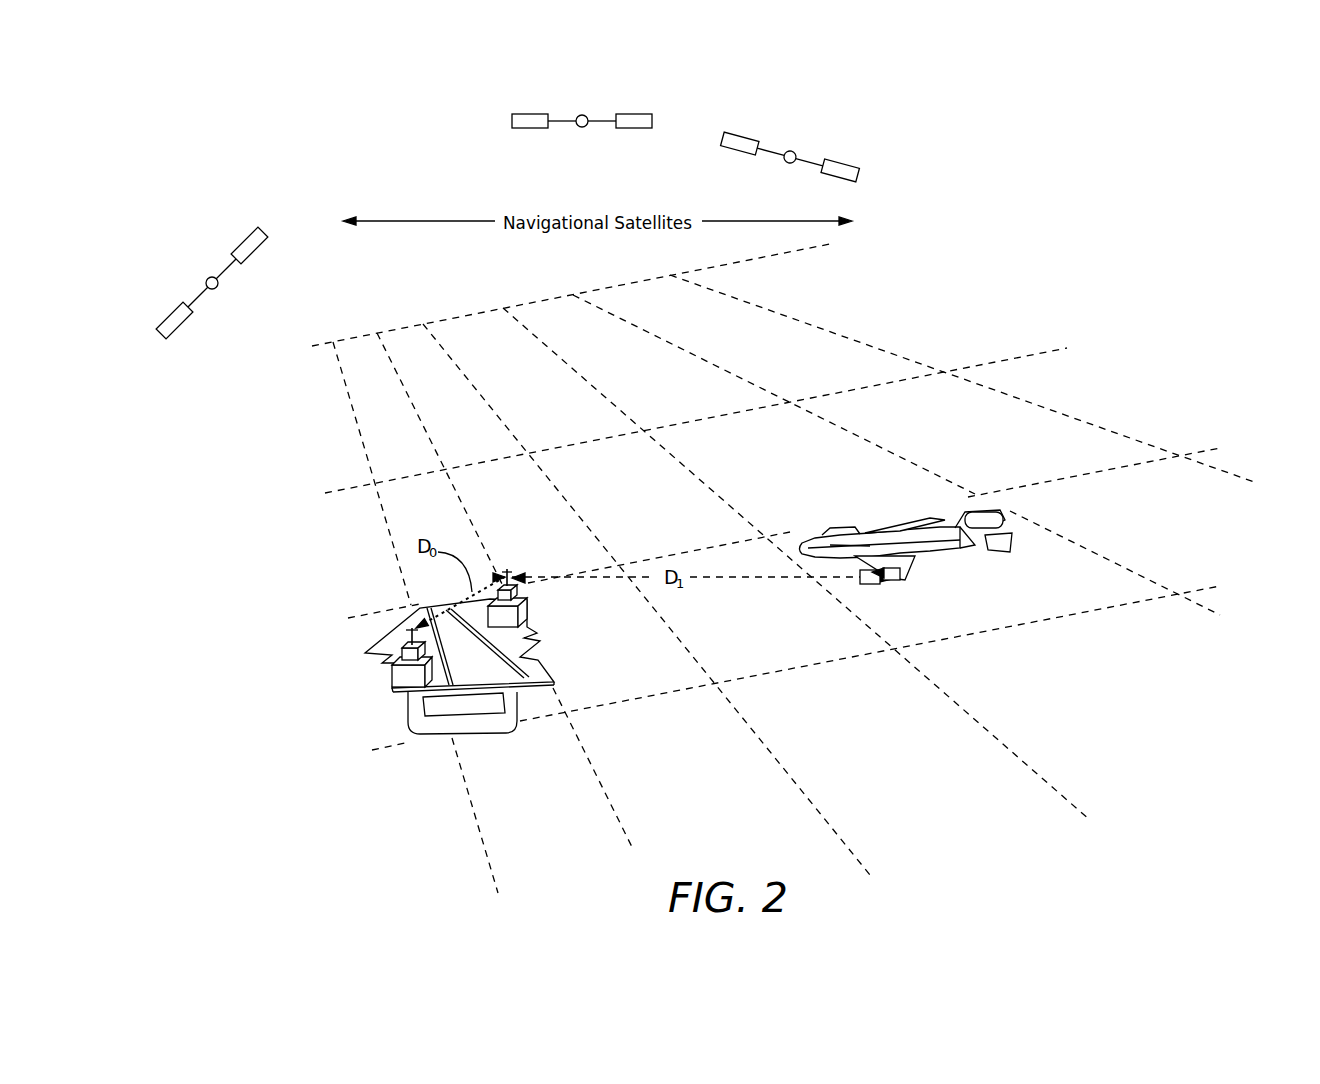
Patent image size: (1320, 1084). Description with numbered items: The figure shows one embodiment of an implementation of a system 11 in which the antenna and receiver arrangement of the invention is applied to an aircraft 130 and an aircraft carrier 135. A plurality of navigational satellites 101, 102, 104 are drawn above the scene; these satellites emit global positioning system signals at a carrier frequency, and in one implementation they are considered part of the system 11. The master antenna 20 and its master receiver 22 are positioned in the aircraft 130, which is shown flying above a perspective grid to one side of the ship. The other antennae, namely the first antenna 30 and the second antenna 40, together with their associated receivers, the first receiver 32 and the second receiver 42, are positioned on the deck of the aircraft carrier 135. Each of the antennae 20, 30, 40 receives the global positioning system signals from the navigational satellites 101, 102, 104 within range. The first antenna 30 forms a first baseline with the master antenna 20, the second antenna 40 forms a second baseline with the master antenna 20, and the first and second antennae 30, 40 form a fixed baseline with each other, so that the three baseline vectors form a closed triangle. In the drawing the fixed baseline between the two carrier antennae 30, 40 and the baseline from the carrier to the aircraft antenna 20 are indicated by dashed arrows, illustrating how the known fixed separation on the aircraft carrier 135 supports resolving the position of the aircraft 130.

The system 11 is at (397, 828).
The master antenna 20 is at (885, 548).
The master receiver 22 is at (877, 578).
The first antenna 30 is at (502, 567).
The first receiver 32 is at (528, 603).
The second antenna 40 is at (405, 636).
The second ship receiver 42 is at (395, 668).
The navigational satellite 101 is at (177, 310).
The navigational satellite 102 is at (533, 113).
The navigational satellite 104 is at (753, 140).
The aircraft 130 is at (922, 520).
The aircraft carrier 135 is at (485, 735).